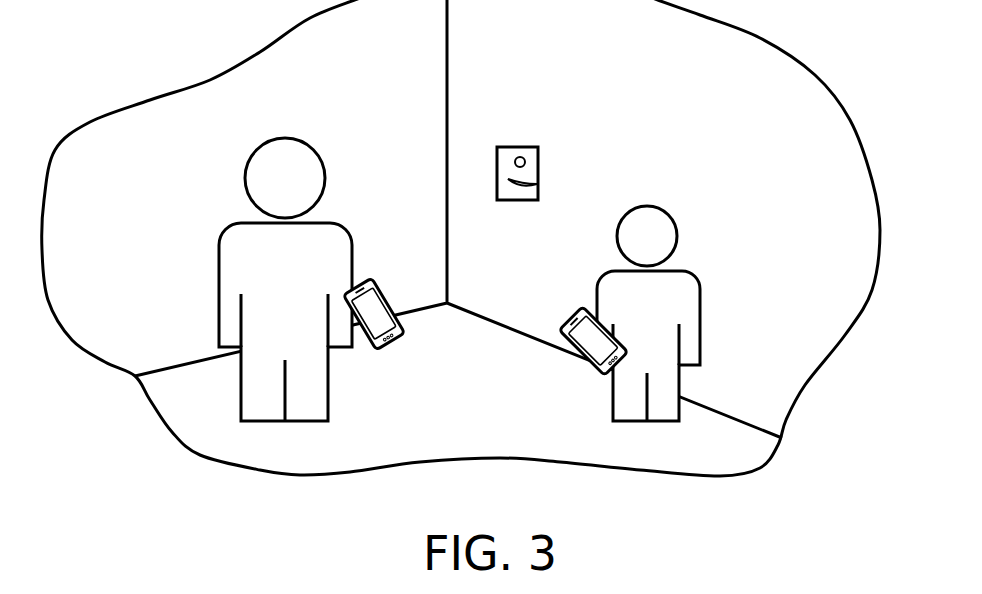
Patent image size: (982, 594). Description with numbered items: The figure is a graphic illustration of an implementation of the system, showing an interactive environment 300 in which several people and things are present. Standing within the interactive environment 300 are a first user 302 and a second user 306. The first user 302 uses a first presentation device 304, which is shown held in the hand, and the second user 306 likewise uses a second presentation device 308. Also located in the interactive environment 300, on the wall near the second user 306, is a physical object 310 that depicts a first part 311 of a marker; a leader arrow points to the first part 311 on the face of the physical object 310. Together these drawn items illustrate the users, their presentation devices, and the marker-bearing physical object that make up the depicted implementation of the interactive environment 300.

The interactive environment 300 is at (383, 84).
The first user 302 is at (218, 263).
The first presentation device 304 is at (387, 283).
The second user 306 is at (700, 315).
The second presentation device 308 is at (562, 327).
The physical object 310 is at (527, 147).
The first part of a marker 311 is at (545, 158).